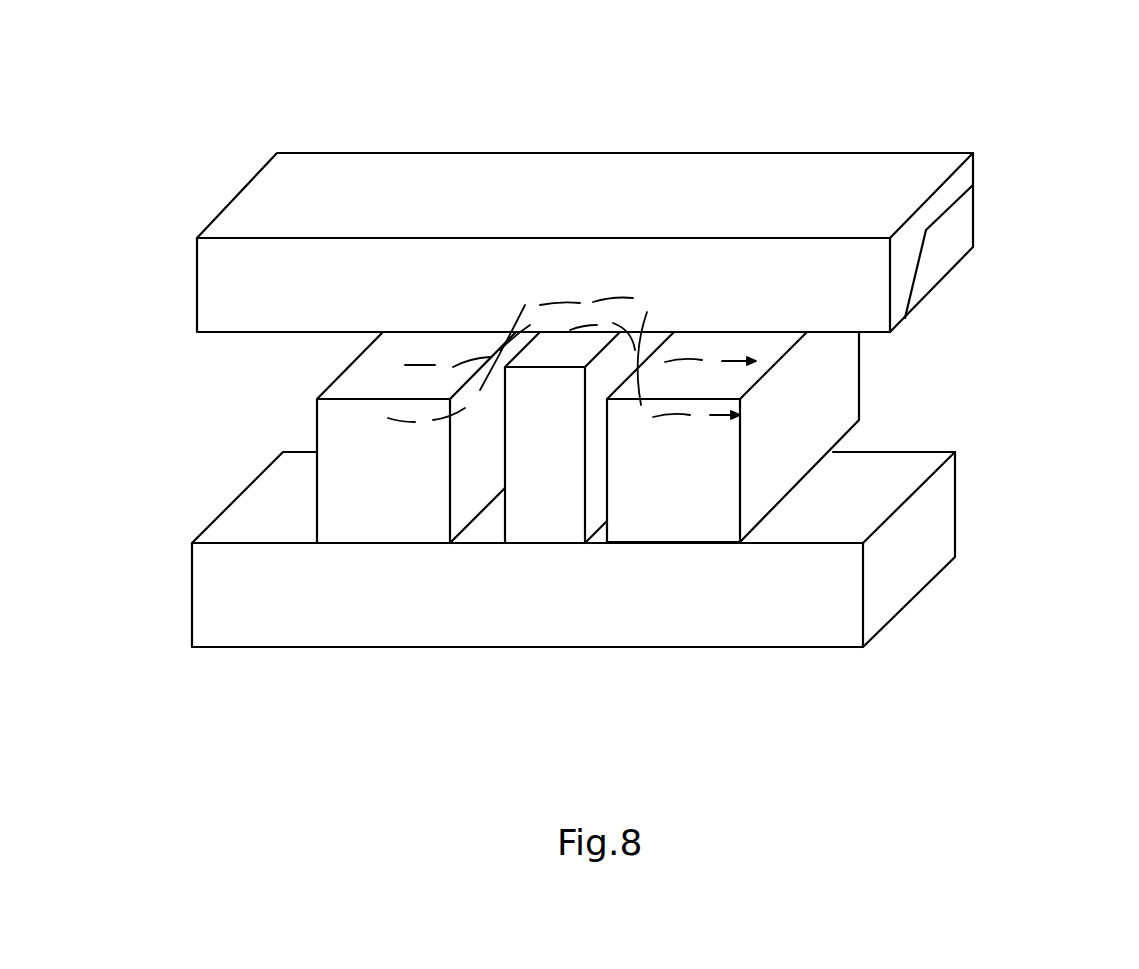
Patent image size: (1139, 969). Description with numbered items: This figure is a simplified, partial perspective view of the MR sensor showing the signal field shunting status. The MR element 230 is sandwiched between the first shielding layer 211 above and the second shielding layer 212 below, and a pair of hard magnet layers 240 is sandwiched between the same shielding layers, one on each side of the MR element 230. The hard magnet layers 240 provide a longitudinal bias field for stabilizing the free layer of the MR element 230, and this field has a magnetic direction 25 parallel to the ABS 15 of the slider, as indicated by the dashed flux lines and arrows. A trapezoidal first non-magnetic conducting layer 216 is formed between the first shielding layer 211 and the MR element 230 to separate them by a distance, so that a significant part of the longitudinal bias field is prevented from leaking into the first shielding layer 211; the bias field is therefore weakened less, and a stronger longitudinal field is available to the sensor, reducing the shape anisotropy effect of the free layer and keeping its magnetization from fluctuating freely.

The ABS 15 is at (742, 298).
The first shielding layer 211 is at (880, 190).
The first non-magnetic conducting layer 216 is at (952, 242).
The second shielding layer 212 is at (938, 538).
The hard magnet layers 240 is at (340, 422).
The MR element 230 is at (563, 490).
The magnetic direction 25 is at (572, 360).